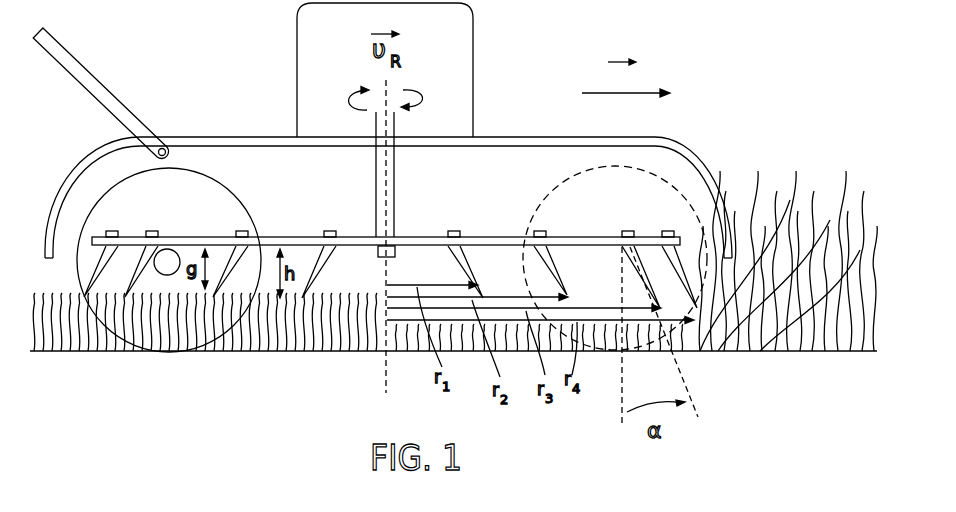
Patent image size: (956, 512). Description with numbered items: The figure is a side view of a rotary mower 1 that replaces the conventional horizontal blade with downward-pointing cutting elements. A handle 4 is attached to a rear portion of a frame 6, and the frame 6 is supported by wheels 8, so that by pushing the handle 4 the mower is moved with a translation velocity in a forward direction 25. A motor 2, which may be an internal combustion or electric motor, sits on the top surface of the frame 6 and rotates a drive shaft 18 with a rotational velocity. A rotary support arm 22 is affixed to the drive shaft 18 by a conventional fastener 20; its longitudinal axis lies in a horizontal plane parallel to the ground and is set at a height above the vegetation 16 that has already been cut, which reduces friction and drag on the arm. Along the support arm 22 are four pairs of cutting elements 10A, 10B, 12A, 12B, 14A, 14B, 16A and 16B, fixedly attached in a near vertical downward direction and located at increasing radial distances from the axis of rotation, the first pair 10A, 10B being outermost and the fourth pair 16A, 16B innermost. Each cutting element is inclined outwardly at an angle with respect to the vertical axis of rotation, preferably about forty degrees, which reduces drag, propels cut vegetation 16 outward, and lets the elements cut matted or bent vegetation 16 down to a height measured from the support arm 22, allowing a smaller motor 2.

The rotary mower 1 is at (571, 46).
The motor 2 is at (296, 66).
The handle 4 is at (112, 90).
The frame 6 is at (712, 173).
The wheels 8 is at (209, 174).
The cutting element 10A is at (110, 229).
The cutting element 12A is at (153, 229).
The cutting element 14A is at (244, 229).
The cutting element 16A is at (328, 229).
The cutting element 10B is at (664, 229).
The cutting element 12B is at (623, 229).
The cutting element 14B is at (538, 229).
The cutting element 16B is at (454, 229).
The vegetation 16 is at (842, 173).
The drive shaft 18 is at (375, 178).
The fastener 20 is at (380, 256).
The rotary support arm 22 is at (372, 236).
The forward direction 25 is at (626, 90).